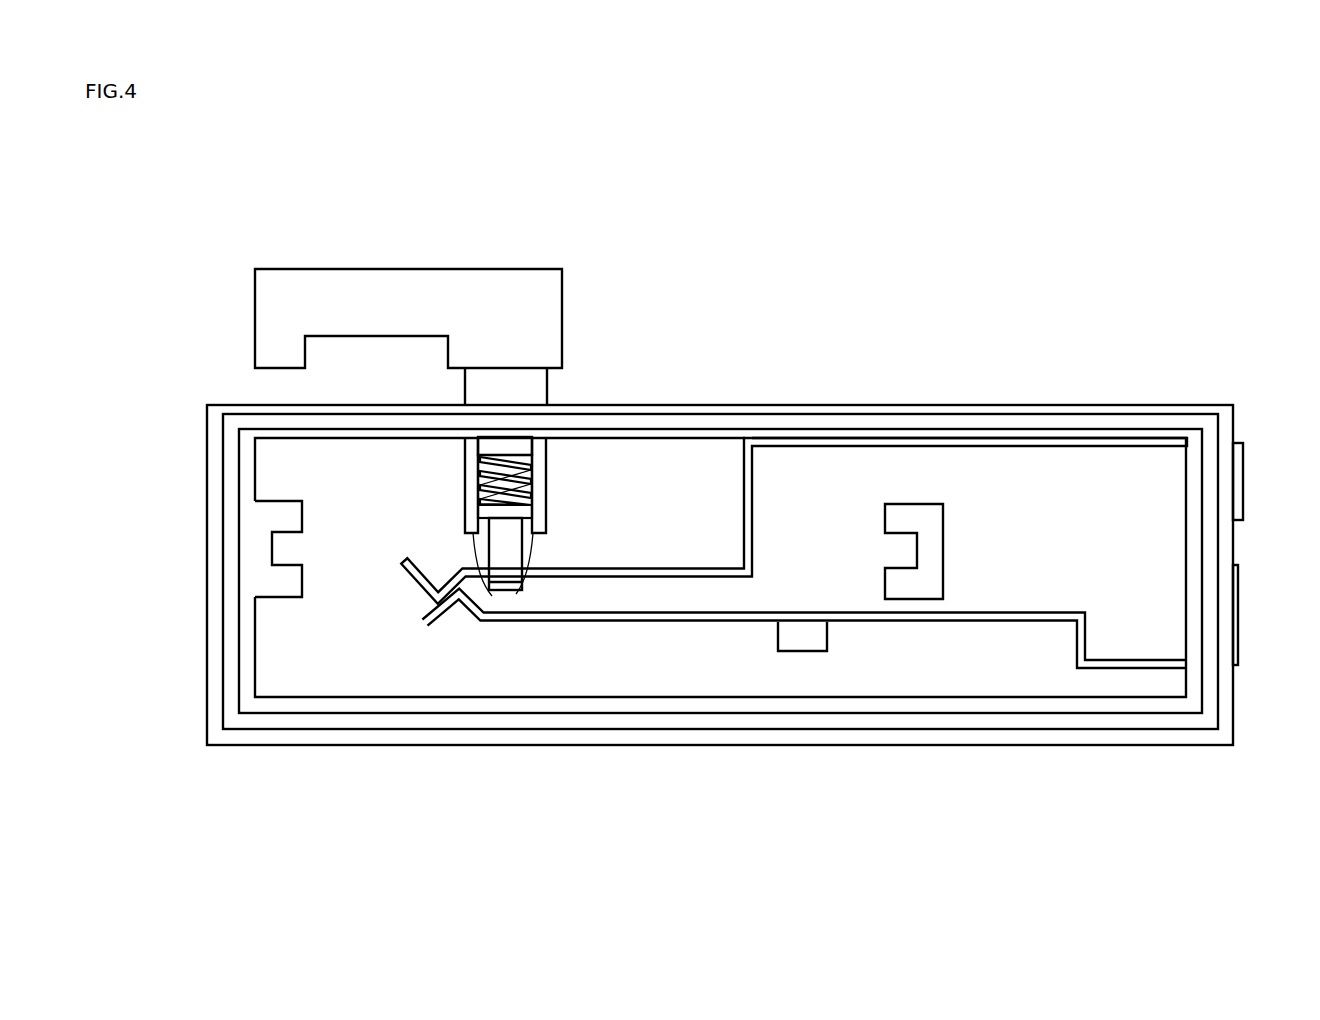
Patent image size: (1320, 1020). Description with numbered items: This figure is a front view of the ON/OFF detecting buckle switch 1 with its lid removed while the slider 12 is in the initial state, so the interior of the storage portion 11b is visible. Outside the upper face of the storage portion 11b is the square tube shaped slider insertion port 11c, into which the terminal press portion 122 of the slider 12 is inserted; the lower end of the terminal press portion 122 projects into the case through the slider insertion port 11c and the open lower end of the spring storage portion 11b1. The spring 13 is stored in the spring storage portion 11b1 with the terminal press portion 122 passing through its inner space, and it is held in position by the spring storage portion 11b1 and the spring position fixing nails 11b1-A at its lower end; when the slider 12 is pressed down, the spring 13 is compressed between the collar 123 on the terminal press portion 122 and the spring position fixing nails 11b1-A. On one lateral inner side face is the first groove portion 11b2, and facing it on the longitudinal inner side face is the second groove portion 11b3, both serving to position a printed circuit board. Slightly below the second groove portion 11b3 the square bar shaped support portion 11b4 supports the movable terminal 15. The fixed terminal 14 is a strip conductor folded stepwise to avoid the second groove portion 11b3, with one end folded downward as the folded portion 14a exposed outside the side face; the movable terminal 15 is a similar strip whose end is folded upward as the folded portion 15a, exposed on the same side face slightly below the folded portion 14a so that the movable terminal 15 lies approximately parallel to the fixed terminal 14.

The ON/OFF detecting buckle switch 1 is at (1233, 255).
The slider 12 is at (474, 268).
The slider insertion port 11c is at (548, 386).
The storage portion 11b is at (633, 745).
The spring storage portion 11b1 is at (466, 468).
The spring position fixing nails 11b1-A is at (517, 578).
The first groove portion 11b2 is at (280, 587).
The second groove portion 11b3 is at (892, 576).
The support portion 11b4 is at (803, 651).
The spring 13 is at (531, 483).
The fixed terminal 14 is at (755, 490).
The folded portion 14a is at (1243, 490).
The movable terminal 15 is at (1043, 612).
The folded portion 15a is at (1238, 632).
The terminal press portion 122 is at (519, 542).
The collar 123 is at (524, 445).